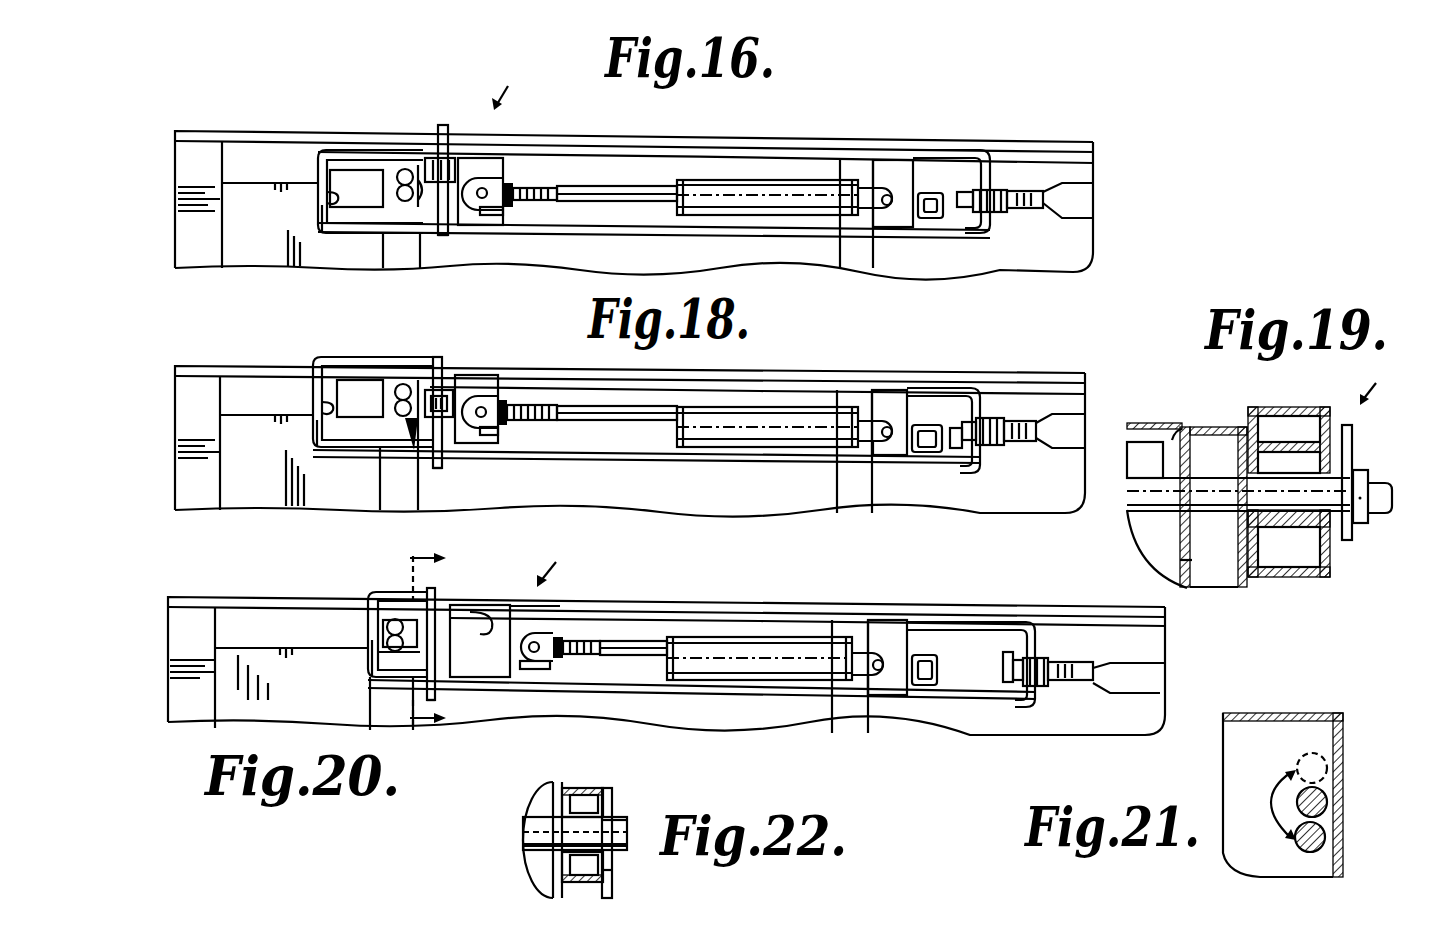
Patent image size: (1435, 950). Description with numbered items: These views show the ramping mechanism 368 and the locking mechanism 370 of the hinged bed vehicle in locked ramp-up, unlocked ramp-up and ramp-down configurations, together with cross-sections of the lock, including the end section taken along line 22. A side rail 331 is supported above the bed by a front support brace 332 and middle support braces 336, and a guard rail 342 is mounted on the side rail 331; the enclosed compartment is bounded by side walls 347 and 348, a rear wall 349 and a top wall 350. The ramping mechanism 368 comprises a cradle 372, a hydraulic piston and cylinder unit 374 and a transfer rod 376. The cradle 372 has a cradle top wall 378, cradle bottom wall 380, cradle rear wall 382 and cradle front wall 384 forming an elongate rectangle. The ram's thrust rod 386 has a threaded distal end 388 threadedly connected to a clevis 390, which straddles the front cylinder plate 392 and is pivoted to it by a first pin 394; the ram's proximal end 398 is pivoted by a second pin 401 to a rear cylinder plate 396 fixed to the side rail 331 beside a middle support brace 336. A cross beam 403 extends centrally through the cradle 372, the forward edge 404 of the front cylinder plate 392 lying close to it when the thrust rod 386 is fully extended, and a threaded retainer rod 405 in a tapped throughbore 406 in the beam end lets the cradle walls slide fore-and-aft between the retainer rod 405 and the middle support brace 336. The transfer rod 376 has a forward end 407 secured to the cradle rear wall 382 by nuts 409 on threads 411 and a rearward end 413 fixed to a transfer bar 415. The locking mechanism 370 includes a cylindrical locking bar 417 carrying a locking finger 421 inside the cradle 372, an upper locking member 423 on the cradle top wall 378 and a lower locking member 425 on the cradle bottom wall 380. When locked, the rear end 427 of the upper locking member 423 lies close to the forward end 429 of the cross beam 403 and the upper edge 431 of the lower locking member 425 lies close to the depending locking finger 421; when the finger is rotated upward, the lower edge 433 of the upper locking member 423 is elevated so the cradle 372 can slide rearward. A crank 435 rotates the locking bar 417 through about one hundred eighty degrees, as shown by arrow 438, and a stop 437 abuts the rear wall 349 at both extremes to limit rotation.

In FIG. 20, the section line 22— 22 is at (413, 635).
In FIG. 16, the side rail 331 is at (262, 150).
In FIG. 18, the side rail 331 is at (228, 400).
In FIG. 20, the side rail 331 is at (222, 633).
In FIG. 19, the side rail 331 is at (1187, 428).
In FIG. 16, the front support brace 332 is at (197, 252).
In FIG. 18, the front support brace 332 is at (195, 495).
In FIG. 20, the front support brace 332 is at (190, 727).
In FIG. 16, the middle support brace 336 is at (405, 266).
In FIG. 18, the middle support brace 336 is at (400, 502).
In FIG. 20, the middle support brace 336 is at (420, 731).
In FIG. 19, the middle support brace 336 is at (1230, 590).
In FIG. 22, the middle support brace 336 is at (555, 782).
In FIG. 16, the guard rail 342 is at (1002, 146).
In FIG. 18, the guard rail 342 is at (985, 377).
In FIG. 20, the guard rail 342 is at (1041, 608).
In FIG. 19, the guard rail 342 is at (1240, 420).
In FIG. 16, the side wall 347 is at (270, 255).
In FIG. 18, the side wall 347 is at (272, 502).
In FIG. 20, the side wall 347 is at (286, 724).
In FIG. 19, the side wall 347 is at (1180, 562).
In FIG. 21, the side wall 348 is at (1236, 760).
In FIG. 19, the rear wall 349 is at (1127, 528).
In FIG. 21, the rear wall 349 is at (1340, 742).
In FIG. 19, the top wall 350 is at (1165, 420).
In FIG. 21, the top wall 350 is at (1297, 712).
In FIG. 16, the ramping mechanism 368 is at (508, 87).
In FIG. 20, the ramping mechanism 368 is at (554, 562).
In FIG. 19, the locking mechanism 370 is at (1260, 437).
In FIG. 16, the cradle 372 is at (578, 150).
In FIG. 18, the cradle 372 is at (578, 372).
In FIG. 20, the cradle 372 is at (633, 606).
In FIG. 22, the cradle 372 is at (583, 790).
In FIG. 16, the hydraulic piston and cylinder unit 374 is at (782, 216).
In FIG. 18, the hydraulic piston and cylinder unit 374 is at (752, 415).
In FIG. 20, the hydraulic piston and cylinder unit 374 is at (778, 681).
In FIG. 16, the transfer rod 376 is at (1035, 212).
In FIG. 18, the transfer rod 376 is at (1022, 445).
In FIG. 20, the transfer rod 376 is at (1055, 660).
In FIG. 16, the cradle top wall 378 is at (795, 150).
In FIG. 18, the cradle top wall 378 is at (808, 380).
In FIG. 20, the cradle top wall 378 is at (722, 612).
In FIG. 19, the cradle top wall 378 is at (1283, 405).
In FIG. 16, the cradle bottom wall 380 is at (650, 233).
In FIG. 18, the cradle bottom wall 380 is at (700, 460).
In FIG. 20, the cradle bottom wall 380 is at (655, 691).
In FIG. 19, the cradle bottom wall 380 is at (1300, 580).
In FIG. 16, the cradle rear wall 382 is at (975, 236).
In FIG. 18, the cradle rear wall 382 is at (985, 475).
In FIG. 20, the cradle rear wall 382 is at (1040, 702).
In FIG. 16, the cradle front wall 384 is at (318, 215).
In FIG. 18, the cradle front wall 384 is at (310, 428).
In FIG. 20, the cradle front wall 384 is at (368, 656).
In FIG. 16, the thrust rod 386 is at (620, 186).
In FIG. 18, the thrust rod 386 is at (640, 431).
In FIG. 20, the thrust rod 386 is at (633, 662).
In FIG. 16, the threaded distal end 388 is at (528, 184).
In FIG. 18, the threaded distal end 388 is at (545, 409).
In FIG. 20, the threaded distal end 388 is at (585, 645).
In FIG. 16, the clevis 390 is at (487, 152).
In FIG. 18, the clevis 390 is at (508, 406).
In FIG. 20, the clevis 390 is at (553, 664).
In FIG. 16, the front cylinder plate 392 is at (513, 156).
In FIG. 18, the front cylinder plate 392 is at (476, 409).
In FIG. 20, the front cylinder plate 392 is at (562, 605).
In FIG. 16, the first pin 394 is at (503, 211).
In FIG. 18, the first pin 394 is at (500, 430).
In FIG. 20, the first pin 394 is at (533, 670).
In FIG. 16, the rear cylinder plate 396 is at (888, 165).
In FIG. 18, the rear cylinder plate 396 is at (910, 388).
In FIG. 20, the rear cylinder plate 396 is at (870, 618).
In FIG. 18, the proximal end 398 is at (885, 456).
In FIG. 20, the proximal end 398 is at (882, 697).
In FIG. 16, the second pin 401 is at (905, 198).
In FIG. 18, the second pin 401 is at (891, 426).
In FIG. 20, the second pin 401 is at (882, 659).
In FIG. 18, the cross beam 403 is at (437, 357).
In FIG. 20, the cross beam 403 is at (435, 598).
In FIG. 22, the cross beam 403 is at (615, 822).
In FIG. 16, the forward edge 404 is at (446, 125).
In FIG. 18, the forward edge 404 is at (447, 385).
In FIG. 20, the forward edge 404 is at (462, 606).
In FIG. 16, the retainer rod 405 is at (448, 234).
In FIG. 18, the retainer rod 405 is at (442, 463).
In FIG. 20, the retainer rod 405 is at (437, 690).
In FIG. 22, the retainer rod 405 is at (617, 796).
In FIG. 22, the tapped throughbore 406 is at (575, 833).
In FIG. 18, the forward end 407 is at (948, 428).
In FIG. 20, the forward end 407 is at (1005, 668).
In FIG. 18, the nut 409 is at (958, 448).
In FIG. 20, the nut 409 is at (1013, 682).
In FIG. 20, the threads 411 is at (1006, 656).
In FIG. 16, the rearward end 413 is at (1022, 193).
In FIG. 18, the rearward end 413 is at (1032, 424).
In FIG. 20, the rearward end 413 is at (1095, 662).
In FIG. 16, the transfer bar 415 is at (1095, 203).
In FIG. 18, the transfer bar 415 is at (1068, 448).
In FIG. 20, the transfer bar 415 is at (1150, 697).
In FIG. 16, the locking bar 417 is at (408, 169).
In FIG. 18, the locking bar 417 is at (393, 414).
In FIG. 20, the locking bar 417 is at (387, 642).
In FIG. 19, the locking bar 417 is at (1375, 478).
In FIG. 21, the locking bar 417 is at (1330, 803).
In FIG. 16, the locking finger 421 is at (388, 203).
In FIG. 18, the locking finger 421 is at (392, 392).
In FIG. 20, the locking finger 421 is at (385, 622).
In FIG. 19, the locking finger 421 is at (1262, 460).
In FIG. 22, the locking finger 421 is at (540, 805).
In FIG. 18, the upper locking member 423 is at (362, 366).
In FIG. 20, the upper locking member 423 is at (378, 598).
In FIG. 19, the upper locking member 423 is at (1325, 406).
In FIG. 22, the upper locking member 423 is at (615, 870).
In FIG. 16, the lower locking member 425 is at (352, 230).
In FIG. 18, the lower locking member 425 is at (338, 437).
In FIG. 20, the lower locking member 425 is at (378, 680).
In FIG. 19, the lower locking member 425 is at (1332, 553).
In FIG. 16, the rear end 427 is at (432, 158).
In FIG. 20, the rear end 427 is at (476, 628).
In FIG. 16, the forward end 429 is at (415, 195).
In FIG. 18, the forward end 429 is at (400, 427).
In FIG. 16, the upper edge 431 is at (328, 198).
In FIG. 18, the upper edge 431 is at (322, 408).
In FIG. 20, the upper edge 431 is at (436, 661).
In FIG. 16, the lower edge 433 is at (330, 170).
In FIG. 18, the lower edge 433 is at (318, 370).
In FIG. 19, the crank 435 is at (1355, 440).
In FIG. 19, the stop 437 is at (1143, 455).
In FIG. 21, the stop 437 is at (1312, 752).
In FIG. 21, the arrow 438 is at (1265, 811).